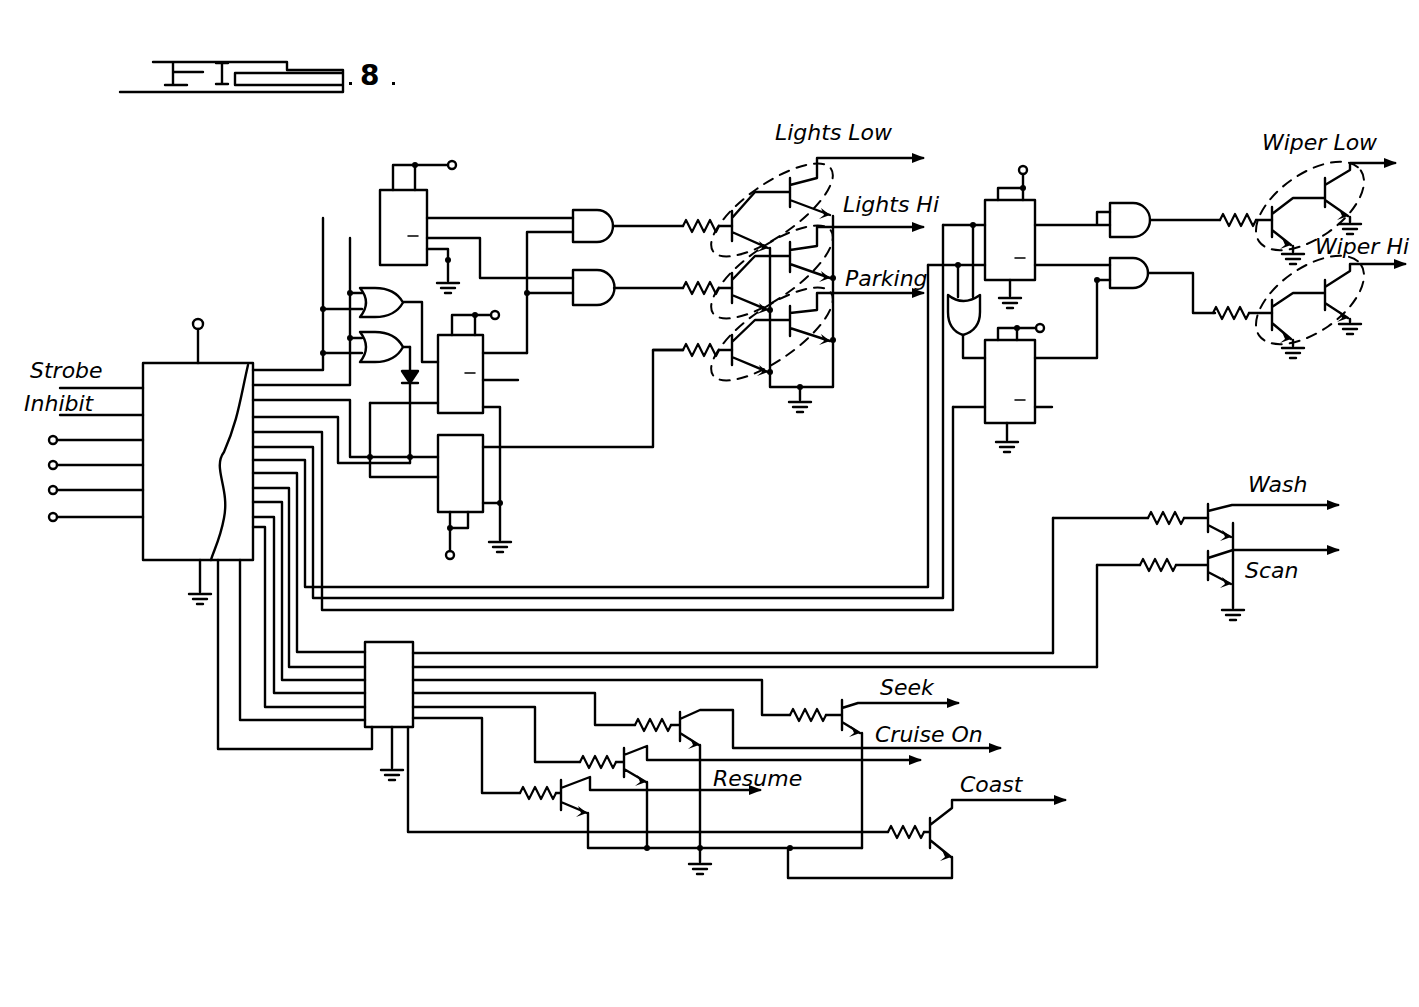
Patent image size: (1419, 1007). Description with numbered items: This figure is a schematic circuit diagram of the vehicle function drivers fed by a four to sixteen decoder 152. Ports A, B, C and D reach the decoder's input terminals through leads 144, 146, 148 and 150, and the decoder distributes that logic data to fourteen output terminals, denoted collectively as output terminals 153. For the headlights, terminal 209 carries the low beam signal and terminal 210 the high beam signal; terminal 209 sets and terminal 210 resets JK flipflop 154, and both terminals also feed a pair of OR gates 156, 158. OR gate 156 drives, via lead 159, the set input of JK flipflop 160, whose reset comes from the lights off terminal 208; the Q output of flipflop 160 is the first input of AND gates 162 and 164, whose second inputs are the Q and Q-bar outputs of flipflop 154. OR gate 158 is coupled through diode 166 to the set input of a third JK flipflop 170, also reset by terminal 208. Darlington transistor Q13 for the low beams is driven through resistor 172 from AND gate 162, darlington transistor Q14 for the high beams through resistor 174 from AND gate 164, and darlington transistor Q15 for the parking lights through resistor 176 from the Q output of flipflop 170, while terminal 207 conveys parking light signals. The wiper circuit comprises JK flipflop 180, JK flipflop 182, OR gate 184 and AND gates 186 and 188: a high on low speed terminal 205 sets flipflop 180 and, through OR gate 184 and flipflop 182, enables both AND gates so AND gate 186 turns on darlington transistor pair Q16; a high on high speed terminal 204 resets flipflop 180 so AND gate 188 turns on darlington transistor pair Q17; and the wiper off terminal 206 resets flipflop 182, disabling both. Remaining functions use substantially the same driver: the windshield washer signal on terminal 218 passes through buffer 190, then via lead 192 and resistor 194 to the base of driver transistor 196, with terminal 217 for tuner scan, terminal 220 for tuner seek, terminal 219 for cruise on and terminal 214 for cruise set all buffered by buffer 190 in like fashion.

The lead 144 is at (58, 515).
The lead 146 is at (58, 488).
The lead 148 is at (58, 463).
The lead 150 is at (58, 438).
The decoder 152 is at (215, 423).
The output terminals 153 is at (212, 462).
The JK flipflop 154 is at (428, 192).
The OR gate 156 is at (385, 290).
The OR gate 158 is at (380, 336).
The lead 159 is at (420, 306).
The JK flipflop 160 is at (487, 364).
The AND gate 162 is at (598, 212).
The AND gate 164 is at (600, 278).
The diode 166 is at (404, 379).
The JK flipflop 170 is at (470, 462).
The resistor 172 is at (690, 223).
The resistor 174 is at (697, 287).
The resistor 176 is at (693, 349).
The JK flipflop 180 is at (1033, 201).
The JK flipflop 182 is at (1022, 377).
The OR gate 184 is at (972, 318).
The AND gate 186 is at (1132, 206).
The AND gate 188 is at (1131, 285).
The buffer 190 is at (409, 648).
The lead 192 is at (633, 652).
The resistor 194 is at (1163, 511).
The driver transistor 196 is at (1220, 500).
The output terminal 204 is at (590, 426).
The output terminal 205 is at (598, 411).
The output terminal 206 is at (603, 508).
The output terminal 207 is at (331, 432).
The output terminal 208 is at (345, 423).
The output terminal 209 is at (289, 294).
The output terminal 210 is at (303, 311).
The output terminal 214 is at (258, 548).
The output terminal 217 is at (309, 570).
The output terminal 218 is at (309, 556).
The output terminal 219 is at (309, 598).
The output terminal 220 is at (309, 584).
The darlington transistor Q13 is at (750, 185).
The darlington transistor Q14 is at (725, 274).
The darlington transistor Q15 is at (722, 378).
The darlington transistor pair Q16 is at (1293, 185).
The darlington transistor pair Q17 is at (1312, 322).